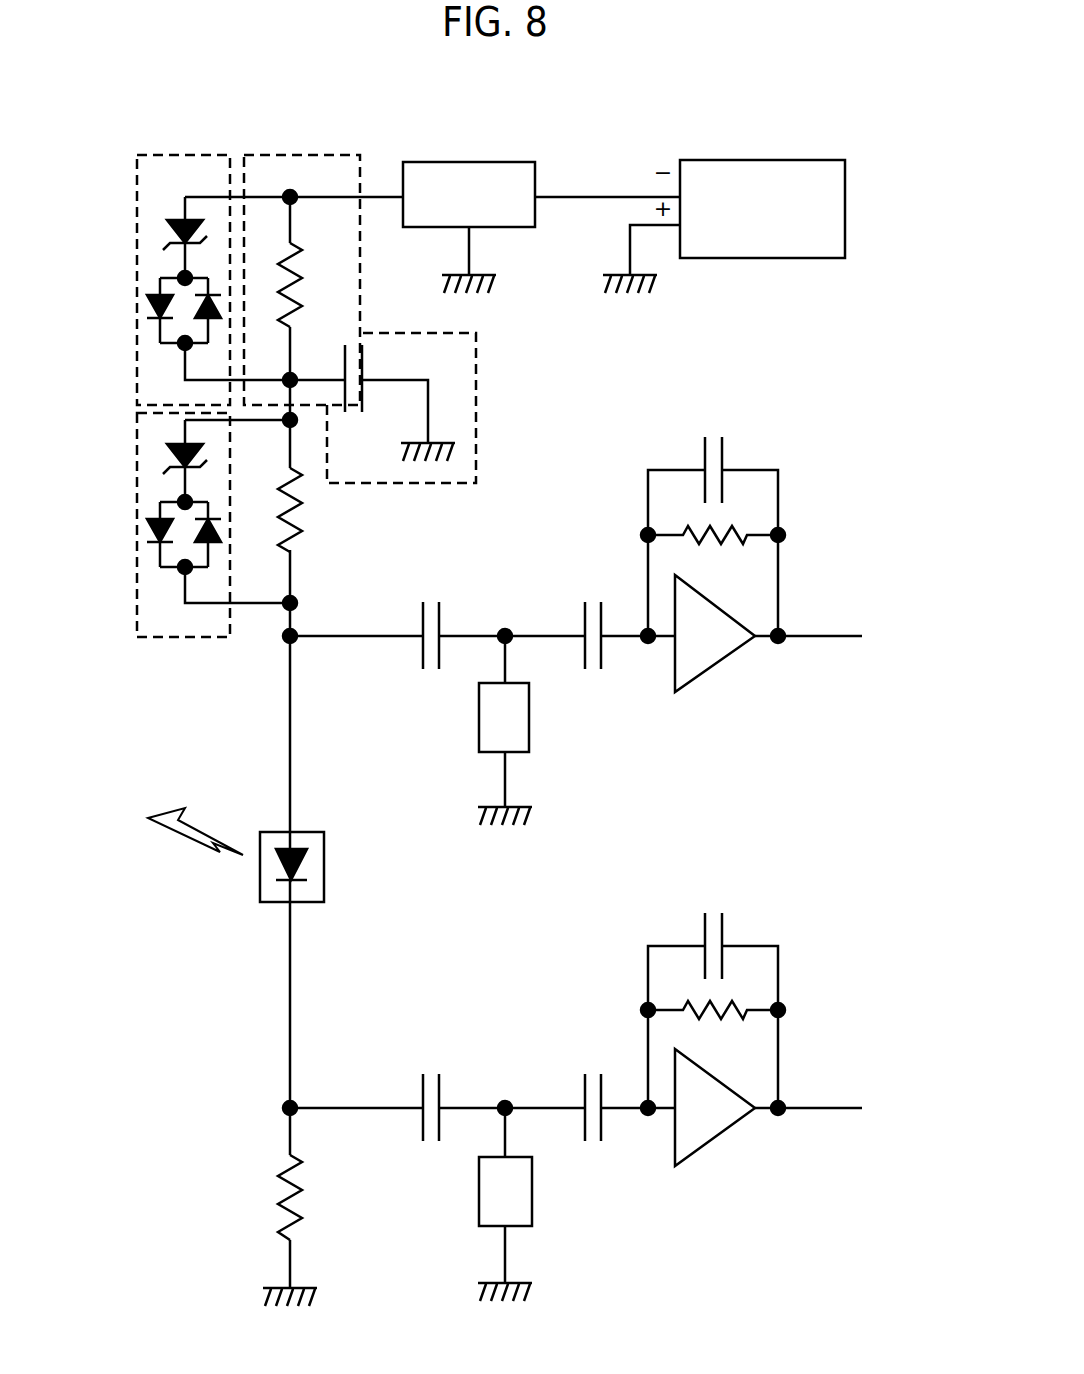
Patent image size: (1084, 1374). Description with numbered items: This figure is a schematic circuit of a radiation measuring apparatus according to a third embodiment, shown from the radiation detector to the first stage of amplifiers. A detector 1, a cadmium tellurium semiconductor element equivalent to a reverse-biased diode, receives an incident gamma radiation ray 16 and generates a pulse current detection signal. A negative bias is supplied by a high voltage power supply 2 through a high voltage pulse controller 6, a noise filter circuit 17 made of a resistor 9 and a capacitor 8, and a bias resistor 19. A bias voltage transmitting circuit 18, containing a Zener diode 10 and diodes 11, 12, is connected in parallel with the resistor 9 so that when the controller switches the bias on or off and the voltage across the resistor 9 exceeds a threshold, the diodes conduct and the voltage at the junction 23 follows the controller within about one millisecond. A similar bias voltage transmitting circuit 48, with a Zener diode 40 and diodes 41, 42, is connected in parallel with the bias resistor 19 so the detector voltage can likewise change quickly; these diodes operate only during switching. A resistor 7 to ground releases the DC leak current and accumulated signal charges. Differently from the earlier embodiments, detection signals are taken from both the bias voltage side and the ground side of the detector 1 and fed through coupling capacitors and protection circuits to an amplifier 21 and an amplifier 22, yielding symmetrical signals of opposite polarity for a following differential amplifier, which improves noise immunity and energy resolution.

The detector 1 is at (255, 890).
The high voltage power supply 2 is at (749, 160).
The high voltage pulse controller 6 is at (467, 162).
The resistor 7 is at (272, 1205).
The capacitor 8 is at (365, 362).
The resistor 9 is at (305, 282).
The Zener diode 10 is at (157, 237).
The diode 11 is at (140, 305).
The diode 12 is at (182, 325).
The radiation ray 16 is at (150, 826).
The noise filter circuit 17 is at (288, 155).
The bias voltage transmitting circuit 18 is at (178, 155).
The bias resistor 19 is at (313, 505).
The amplifier 21 is at (716, 645).
The amplifier 22 is at (716, 1133).
The junction 23 is at (298, 426).
The Zener diode 40 is at (157, 465).
The diode 41 is at (140, 547).
The diode 42 is at (182, 552).
The bias voltage transmitting circuit 48 is at (173, 637).